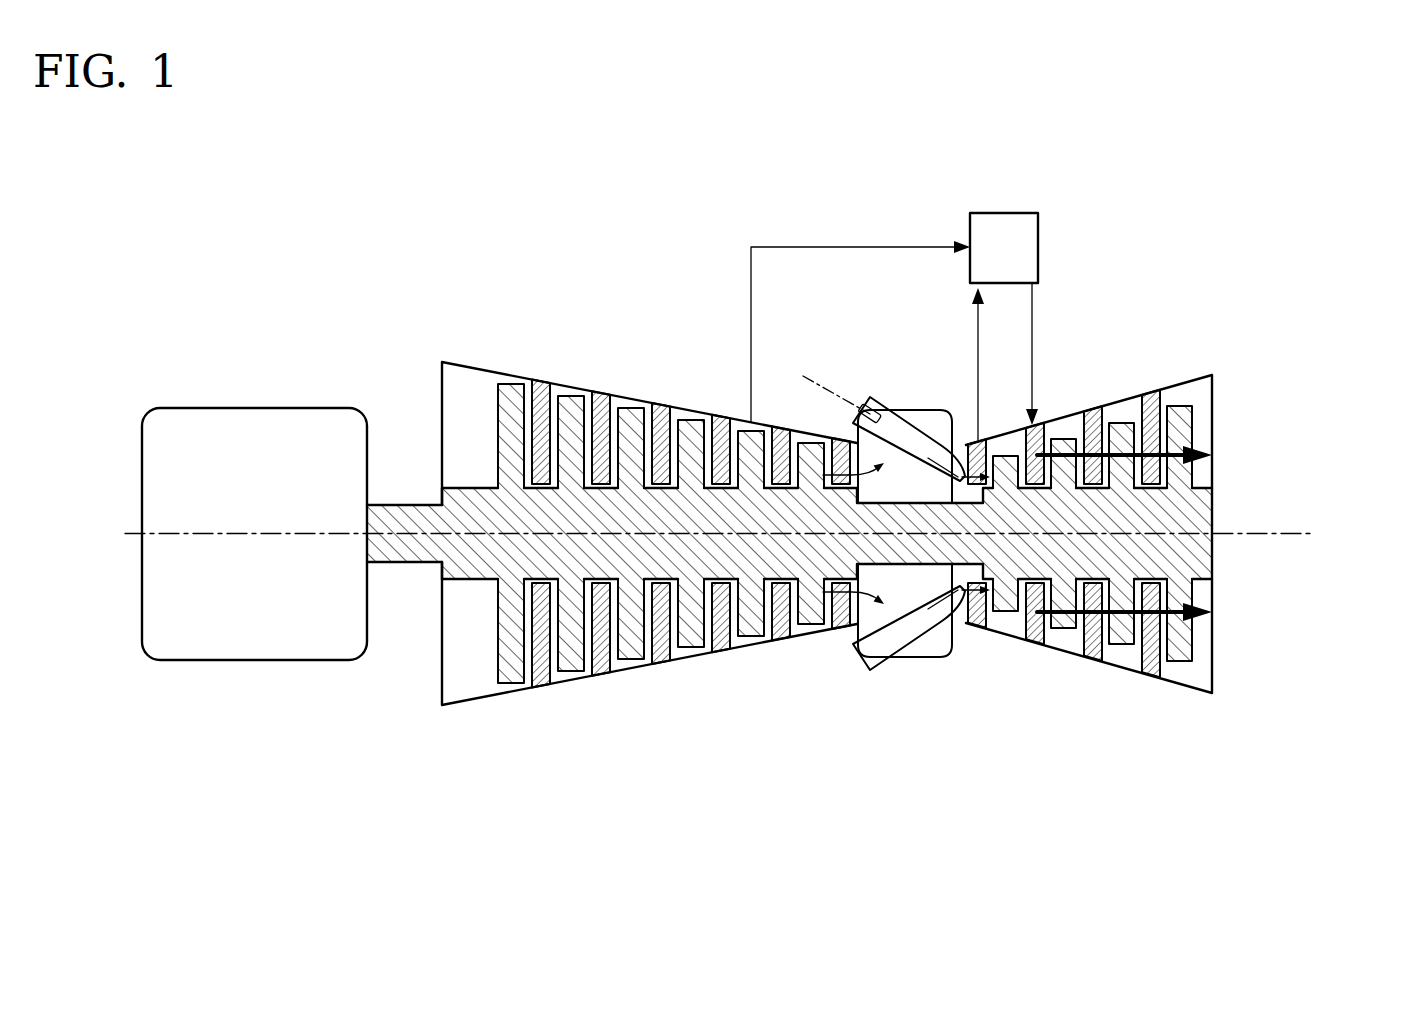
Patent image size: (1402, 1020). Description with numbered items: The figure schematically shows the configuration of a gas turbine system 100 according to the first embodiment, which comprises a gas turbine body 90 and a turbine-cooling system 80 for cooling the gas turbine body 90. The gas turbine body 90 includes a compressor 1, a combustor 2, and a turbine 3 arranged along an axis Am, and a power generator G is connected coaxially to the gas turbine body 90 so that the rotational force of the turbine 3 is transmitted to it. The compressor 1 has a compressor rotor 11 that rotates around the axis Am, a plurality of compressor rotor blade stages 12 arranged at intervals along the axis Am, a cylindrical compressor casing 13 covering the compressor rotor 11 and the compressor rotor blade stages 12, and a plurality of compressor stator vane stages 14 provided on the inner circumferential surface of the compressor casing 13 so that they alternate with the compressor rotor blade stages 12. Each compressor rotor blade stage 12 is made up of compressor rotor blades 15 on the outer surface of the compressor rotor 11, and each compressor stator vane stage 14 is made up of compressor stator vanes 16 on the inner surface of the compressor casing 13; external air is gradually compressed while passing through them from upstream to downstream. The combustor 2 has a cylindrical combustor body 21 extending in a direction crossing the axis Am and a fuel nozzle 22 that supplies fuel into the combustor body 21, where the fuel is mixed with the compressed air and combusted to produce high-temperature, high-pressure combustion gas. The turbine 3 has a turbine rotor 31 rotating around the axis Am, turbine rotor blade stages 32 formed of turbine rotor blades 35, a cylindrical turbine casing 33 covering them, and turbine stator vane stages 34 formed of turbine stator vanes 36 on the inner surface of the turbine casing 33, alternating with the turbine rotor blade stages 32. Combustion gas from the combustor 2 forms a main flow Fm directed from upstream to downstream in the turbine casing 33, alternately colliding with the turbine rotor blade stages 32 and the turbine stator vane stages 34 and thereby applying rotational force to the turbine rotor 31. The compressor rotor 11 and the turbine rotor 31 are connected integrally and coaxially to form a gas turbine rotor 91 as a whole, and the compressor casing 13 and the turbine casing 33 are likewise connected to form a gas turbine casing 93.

The gas turbine system 100 is at (1156, 270).
The gas turbine body 90 is at (1285, 286).
The gas turbine casing 93 is at (876, 529).
The compressor 1 is at (510, 354).
The compressor casing 13 is at (636, 398).
The compressor stator vane stage 14 is at (603, 667).
The compressor stator vane 16 is at (691, 587).
The compressor rotor blade stage 12 is at (508, 675).
The compressor rotor blade 15 is at (647, 603).
The compressor rotor 11 is at (797, 558).
The combustor 2 is at (936, 388).
The combustor body 21 is at (915, 422).
The fuel nozzle 22 is at (868, 415).
The turbine 3 is at (1203, 357).
The turbine casing 33 is at (1055, 415).
The turbine stator vane stage 34 is at (1035, 637).
The turbine stator vane 36 is at (1064, 583).
The turbine rotor blade stage 32 is at (1122, 640).
The turbine rotor blade 35 is at (1100, 613).
The turbine rotor 31 is at (1048, 562).
The gas turbine rotor 91 is at (930, 745).
The turbine-cooling system 80 is at (943, 187).
The power generator G is at (262, 408).
The main flow Fm is at (1158, 455).
The axis Am is at (1295, 530).